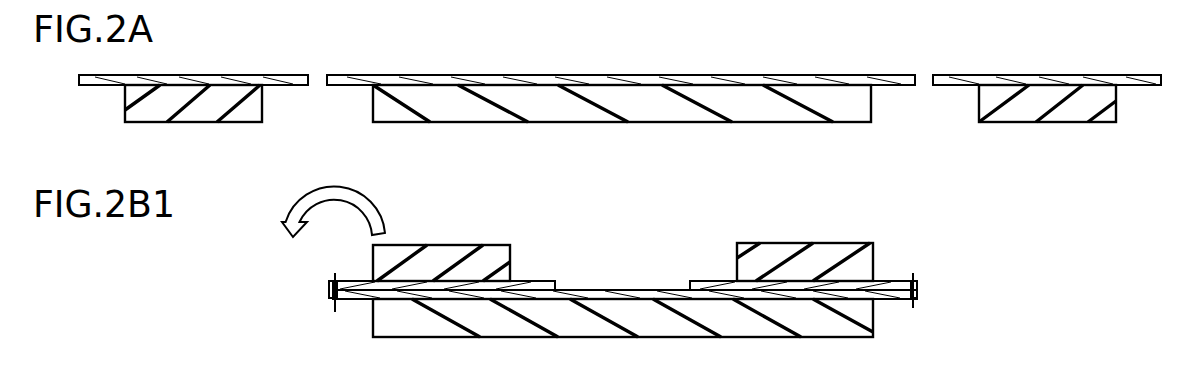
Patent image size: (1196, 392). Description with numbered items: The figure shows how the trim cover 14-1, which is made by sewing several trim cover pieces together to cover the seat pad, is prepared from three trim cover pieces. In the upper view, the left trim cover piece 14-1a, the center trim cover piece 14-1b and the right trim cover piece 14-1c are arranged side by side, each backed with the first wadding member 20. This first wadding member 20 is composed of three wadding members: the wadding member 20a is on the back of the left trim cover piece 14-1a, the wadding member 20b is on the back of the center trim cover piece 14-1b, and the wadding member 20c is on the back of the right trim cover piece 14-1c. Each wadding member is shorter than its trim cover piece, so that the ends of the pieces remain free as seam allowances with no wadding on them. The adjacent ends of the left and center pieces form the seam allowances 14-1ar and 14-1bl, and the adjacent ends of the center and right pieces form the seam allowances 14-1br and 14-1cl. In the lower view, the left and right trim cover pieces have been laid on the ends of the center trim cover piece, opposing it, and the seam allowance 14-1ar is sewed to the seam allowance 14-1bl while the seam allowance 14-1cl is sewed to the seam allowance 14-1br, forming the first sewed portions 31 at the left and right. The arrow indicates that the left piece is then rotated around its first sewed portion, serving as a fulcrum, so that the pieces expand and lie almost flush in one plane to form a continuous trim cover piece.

In FIG. 2A, the trim cover 14-1 is at (604, 84).
In FIG. 2A, the left trim cover piece 14-1a is at (117, 80).
In FIG. 2B1, the left trim cover piece 14-1a is at (565, 258).
In FIG. 2A, the seam allowance 14-1ar is at (297, 78).
In FIG. 2B1, the seam allowance 14-1ar is at (330, 286).
In FIG. 2A, the center trim cover piece 14-1b is at (557, 80).
In FIG. 2B1, the center trim cover piece 14-1b is at (593, 291).
In FIG. 2A, the seam allowance 14-1bl is at (340, 80).
In FIG. 2B1, the seam allowance 14-1bl is at (330, 292).
In FIG. 2A, the seam allowance 14-1br is at (893, 78).
In FIG. 2B1, the seam allowance 14-1br is at (918, 295).
In FIG. 2A, the right trim cover piece 14-1c is at (1099, 78).
In FIG. 2B1, the right trim cover piece 14-1c is at (705, 282).
In FIG. 2A, the seam allowance 14-1cl is at (949, 80).
In FIG. 2B1, the seam allowance 14-1cl is at (917, 287).
In FIG. 2A, the first wadding member 20 is at (644, 121).
In FIG. 2A, the wadding member 20a is at (140, 112).
In FIG. 2B1, the wadding member 20a is at (410, 250).
In FIG. 2A, the wadding member 20b is at (478, 108).
In FIG. 2B1, the wadding member 20b is at (478, 327).
In FIG. 2A, the wadding member 20c is at (1021, 108).
In FIG. 2B1, the wadding member 20c is at (770, 257).
In FIG. 2B1, the first sewed portions 31 is at (340, 324).